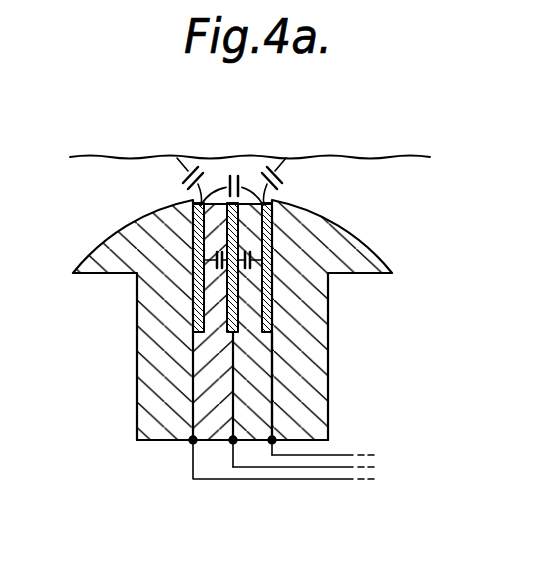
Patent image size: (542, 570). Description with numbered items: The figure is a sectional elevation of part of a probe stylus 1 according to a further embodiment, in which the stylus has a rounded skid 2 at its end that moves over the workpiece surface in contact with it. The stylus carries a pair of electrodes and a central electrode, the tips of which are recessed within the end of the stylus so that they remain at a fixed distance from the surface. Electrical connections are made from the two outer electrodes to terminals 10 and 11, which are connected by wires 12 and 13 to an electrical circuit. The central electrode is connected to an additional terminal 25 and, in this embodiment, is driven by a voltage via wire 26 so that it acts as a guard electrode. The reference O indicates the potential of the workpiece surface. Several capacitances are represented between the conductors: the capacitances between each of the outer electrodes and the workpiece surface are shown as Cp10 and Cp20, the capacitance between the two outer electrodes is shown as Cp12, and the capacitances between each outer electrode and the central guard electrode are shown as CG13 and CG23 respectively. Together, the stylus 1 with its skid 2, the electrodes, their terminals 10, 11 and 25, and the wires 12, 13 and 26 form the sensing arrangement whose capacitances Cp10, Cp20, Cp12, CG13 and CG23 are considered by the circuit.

The probe stylus 1 is at (310, 338).
The rounded skid 2 is at (350, 253).
The terminal 10 is at (191, 442).
The terminal 11 is at (275, 439).
The wire 12 is at (247, 479).
The wire 13 is at (330, 455).
The additional terminal 25 is at (232, 443).
The wire 26 is at (268, 467).
The potential of the workpiece surface O is at (335, 158).
The capacitance between electrode E1 and the workpiece surface Cp10 is at (188, 178).
The capacitance between the two electrodes Cp12 is at (239, 179).
The capacitance between electrode E2 and the workpiece surface Cp20 is at (283, 178).
The capacitance between electrode E1 and guard electrode G3 CG13 is at (204, 261).
The capacitance between electrode E2 and guard electrode G3 CG23 is at (267, 261).